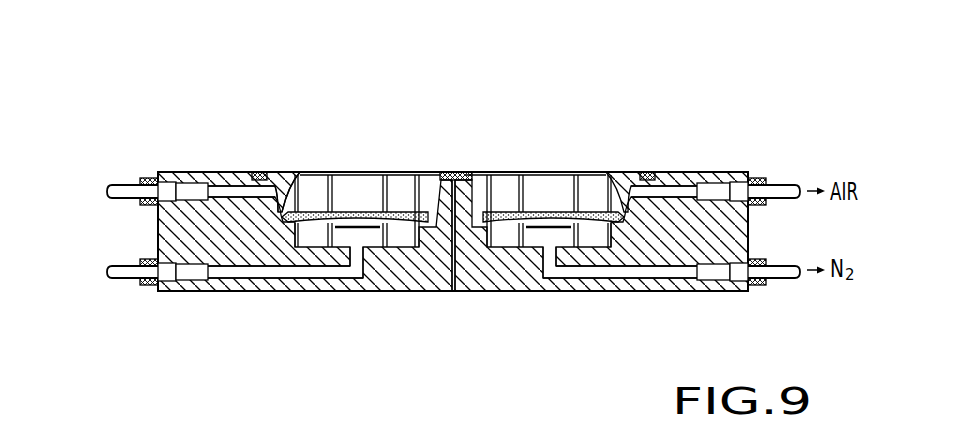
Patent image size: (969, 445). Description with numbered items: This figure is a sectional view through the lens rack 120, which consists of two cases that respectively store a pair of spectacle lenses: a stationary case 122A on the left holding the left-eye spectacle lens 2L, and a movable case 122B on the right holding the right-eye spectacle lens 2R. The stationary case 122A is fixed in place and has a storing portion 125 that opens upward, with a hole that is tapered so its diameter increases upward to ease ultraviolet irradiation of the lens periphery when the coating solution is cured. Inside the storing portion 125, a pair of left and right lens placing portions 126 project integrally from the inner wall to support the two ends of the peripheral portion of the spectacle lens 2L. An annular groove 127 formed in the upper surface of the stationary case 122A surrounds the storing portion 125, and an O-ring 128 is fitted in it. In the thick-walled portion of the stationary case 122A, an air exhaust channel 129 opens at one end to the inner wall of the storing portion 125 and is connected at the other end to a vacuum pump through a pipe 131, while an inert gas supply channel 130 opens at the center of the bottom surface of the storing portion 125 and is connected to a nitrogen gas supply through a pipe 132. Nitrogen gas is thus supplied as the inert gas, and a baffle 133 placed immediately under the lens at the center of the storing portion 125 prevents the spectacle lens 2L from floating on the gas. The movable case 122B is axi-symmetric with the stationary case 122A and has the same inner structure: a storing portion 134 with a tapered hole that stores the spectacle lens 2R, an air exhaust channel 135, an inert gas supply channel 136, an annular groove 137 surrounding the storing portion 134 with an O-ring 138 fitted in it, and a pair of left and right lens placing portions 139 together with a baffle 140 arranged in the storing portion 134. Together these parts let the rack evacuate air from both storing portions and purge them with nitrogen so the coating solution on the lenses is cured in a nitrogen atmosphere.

The lens rack 120 is at (478, 44).
The stationary case 122A is at (225, 158).
The movable case 122B is at (607, 155).
The storing portion 125 is at (292, 200).
The lens placing portions 126 is at (305, 210).
The annular groove 127 is at (283, 180).
The O-ring 128 is at (258, 172).
The air exhaust channel 129 is at (183, 188).
The inert gas supply channel 130 is at (218, 273).
The pipe 131 is at (122, 187).
The pipe 132 is at (122, 268).
The baffle 133 is at (367, 236).
The storing portion 134 is at (605, 212).
The air exhaust channel 135 is at (710, 180).
The inert gas supply channel 136 is at (662, 270).
The annular groove 137 is at (686, 191).
The O-ring 138 is at (650, 174).
The lens placing portions 139 is at (480, 195).
The baffle 140 is at (551, 236).
The left-eye spectacle lens 2L is at (400, 210).
The right-eye spectacle lens 2R is at (525, 210).